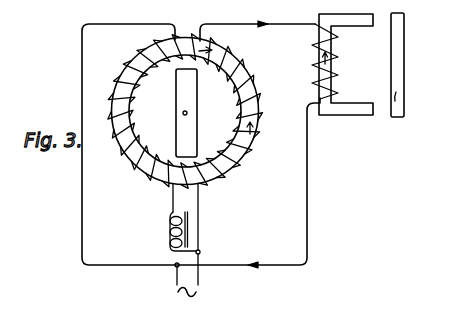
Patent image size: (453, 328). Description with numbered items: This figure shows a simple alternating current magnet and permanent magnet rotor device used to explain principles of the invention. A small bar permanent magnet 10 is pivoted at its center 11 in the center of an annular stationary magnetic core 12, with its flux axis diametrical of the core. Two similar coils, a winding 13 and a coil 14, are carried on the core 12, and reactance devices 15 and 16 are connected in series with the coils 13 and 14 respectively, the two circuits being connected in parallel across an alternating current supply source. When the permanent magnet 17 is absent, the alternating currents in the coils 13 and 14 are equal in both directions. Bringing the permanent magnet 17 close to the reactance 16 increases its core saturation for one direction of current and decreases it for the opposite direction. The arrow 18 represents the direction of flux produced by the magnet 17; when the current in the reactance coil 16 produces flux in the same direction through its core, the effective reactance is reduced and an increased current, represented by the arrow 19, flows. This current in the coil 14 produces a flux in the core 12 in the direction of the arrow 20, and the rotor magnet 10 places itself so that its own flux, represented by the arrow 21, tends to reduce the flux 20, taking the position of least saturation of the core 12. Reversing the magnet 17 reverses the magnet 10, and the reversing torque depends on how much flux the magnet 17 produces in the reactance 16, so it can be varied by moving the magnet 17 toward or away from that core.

The permanent magnet 10 is at (197, 91).
The pivot center 11 is at (188, 114).
The annular stationary magnetic core 12 is at (255, 87).
The winding 13 is at (113, 90).
The coil 14 is at (256, 140).
The reactance device 15 is at (170, 234).
The reactance device 16 is at (315, 47).
The permanent magnet 17 is at (402, 55).
The arrow 18 is at (386, 104).
The arrow 19 is at (265, 27).
The arrow 20 is at (259, 128).
The arrow 21 is at (191, 62).